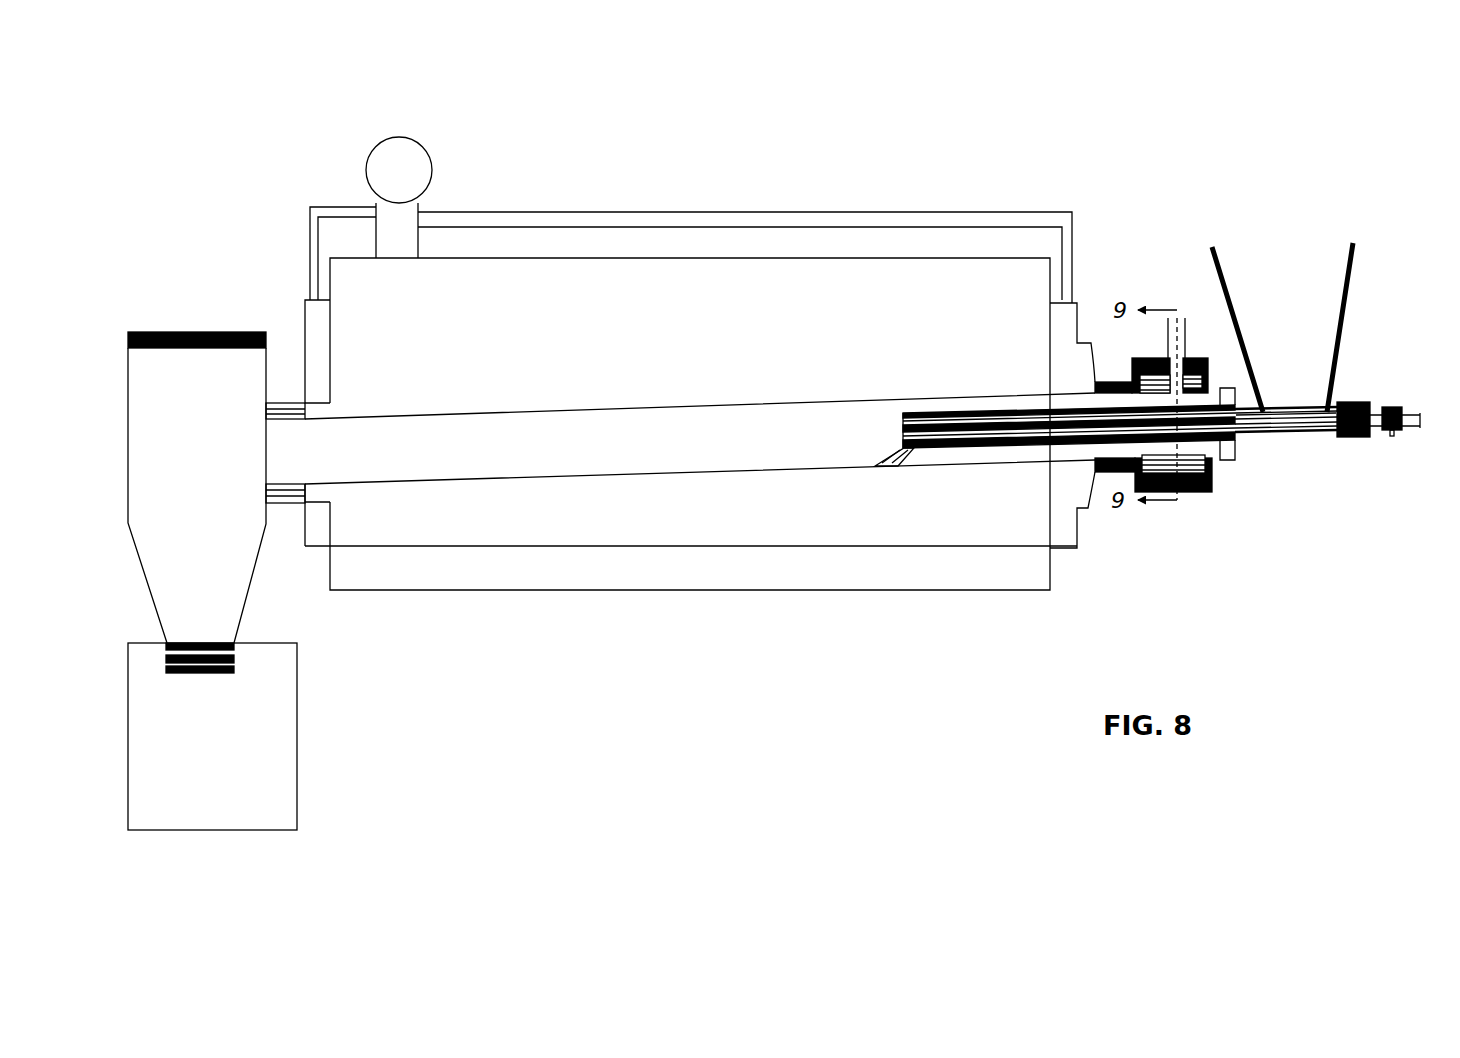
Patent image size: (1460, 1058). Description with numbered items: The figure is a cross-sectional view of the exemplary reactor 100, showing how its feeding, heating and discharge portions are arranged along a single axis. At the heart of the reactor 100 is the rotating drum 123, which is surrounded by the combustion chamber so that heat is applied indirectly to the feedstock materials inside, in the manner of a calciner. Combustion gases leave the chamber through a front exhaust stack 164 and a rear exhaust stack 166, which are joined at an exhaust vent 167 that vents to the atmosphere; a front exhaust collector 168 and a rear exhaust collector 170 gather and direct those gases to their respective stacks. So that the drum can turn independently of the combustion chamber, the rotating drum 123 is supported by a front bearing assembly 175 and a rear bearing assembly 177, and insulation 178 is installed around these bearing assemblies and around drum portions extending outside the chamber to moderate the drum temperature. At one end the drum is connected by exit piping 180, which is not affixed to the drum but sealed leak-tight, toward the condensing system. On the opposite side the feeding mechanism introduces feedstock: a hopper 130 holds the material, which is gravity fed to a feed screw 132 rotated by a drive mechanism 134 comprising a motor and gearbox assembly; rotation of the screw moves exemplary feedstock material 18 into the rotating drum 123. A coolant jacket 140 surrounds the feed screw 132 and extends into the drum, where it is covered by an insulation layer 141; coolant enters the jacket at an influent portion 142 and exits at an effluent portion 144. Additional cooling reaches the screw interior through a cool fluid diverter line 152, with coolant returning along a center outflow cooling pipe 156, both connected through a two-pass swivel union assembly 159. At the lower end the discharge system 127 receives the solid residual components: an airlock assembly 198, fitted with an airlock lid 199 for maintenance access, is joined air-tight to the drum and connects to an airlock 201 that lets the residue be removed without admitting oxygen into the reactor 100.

The reactor 100 is at (896, 102).
The exhaust vent 167 is at (418, 140).
The rear exhaust stack 166 is at (306, 221).
The front exhaust stack 164 is at (1075, 213).
The rear exhaust collector 170 is at (301, 326).
The rear bearing assembly 177 is at (284, 397).
The airlock assembly 198 is at (131, 517).
The airlock lid 199 is at (128, 327).
The discharge system 127 is at (131, 397).
The airlock 201 is at (236, 641).
The rotating drum 123 is at (961, 391).
The front exhaust collector 168 is at (1071, 299).
The insulation 178 is at (1196, 493).
The front bearing assembly 175 is at (1152, 474).
The exit piping 180 is at (1166, 336).
The insulation layer 141 is at (916, 411).
The feedstock material 18 is at (871, 460).
The effluent portion 144 is at (1217, 385).
The influent portion 142 is at (1237, 463).
The feed screw 132 is at (1303, 406).
The coolant jacket 140 is at (1254, 436).
The hopper 130 is at (1232, 299).
The drive mechanism 134 is at (1354, 399).
The cool fluid diverter line 152 is at (1420, 429).
The center outflow cooling pipe 156 is at (1391, 437).
The two-pass swivel union assembly 159 is at (1384, 405).